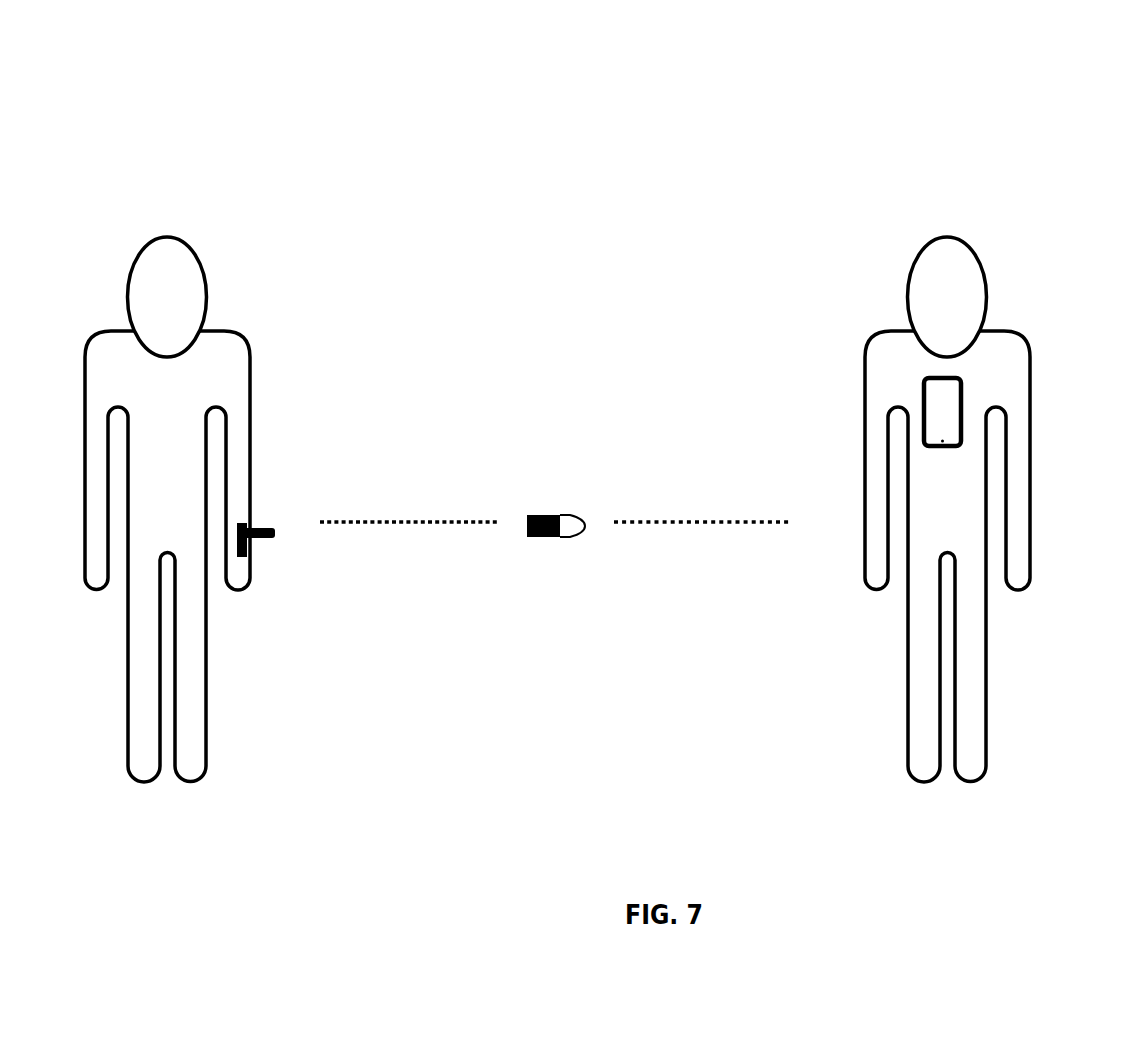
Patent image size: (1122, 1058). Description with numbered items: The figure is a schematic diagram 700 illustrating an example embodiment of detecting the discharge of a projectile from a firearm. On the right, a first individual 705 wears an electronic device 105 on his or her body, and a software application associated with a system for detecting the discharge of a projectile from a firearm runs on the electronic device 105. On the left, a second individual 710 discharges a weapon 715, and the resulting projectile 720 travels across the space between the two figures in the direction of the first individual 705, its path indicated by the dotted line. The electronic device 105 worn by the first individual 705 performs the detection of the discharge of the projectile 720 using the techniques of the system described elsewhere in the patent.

The schematic diagram 700 is at (198, 72).
The first individual 705 is at (1017, 590).
The second individual 710 is at (207, 668).
The weapon 715 is at (258, 540).
The projectile 720 is at (548, 515).
The electronic device 105 is at (948, 410).